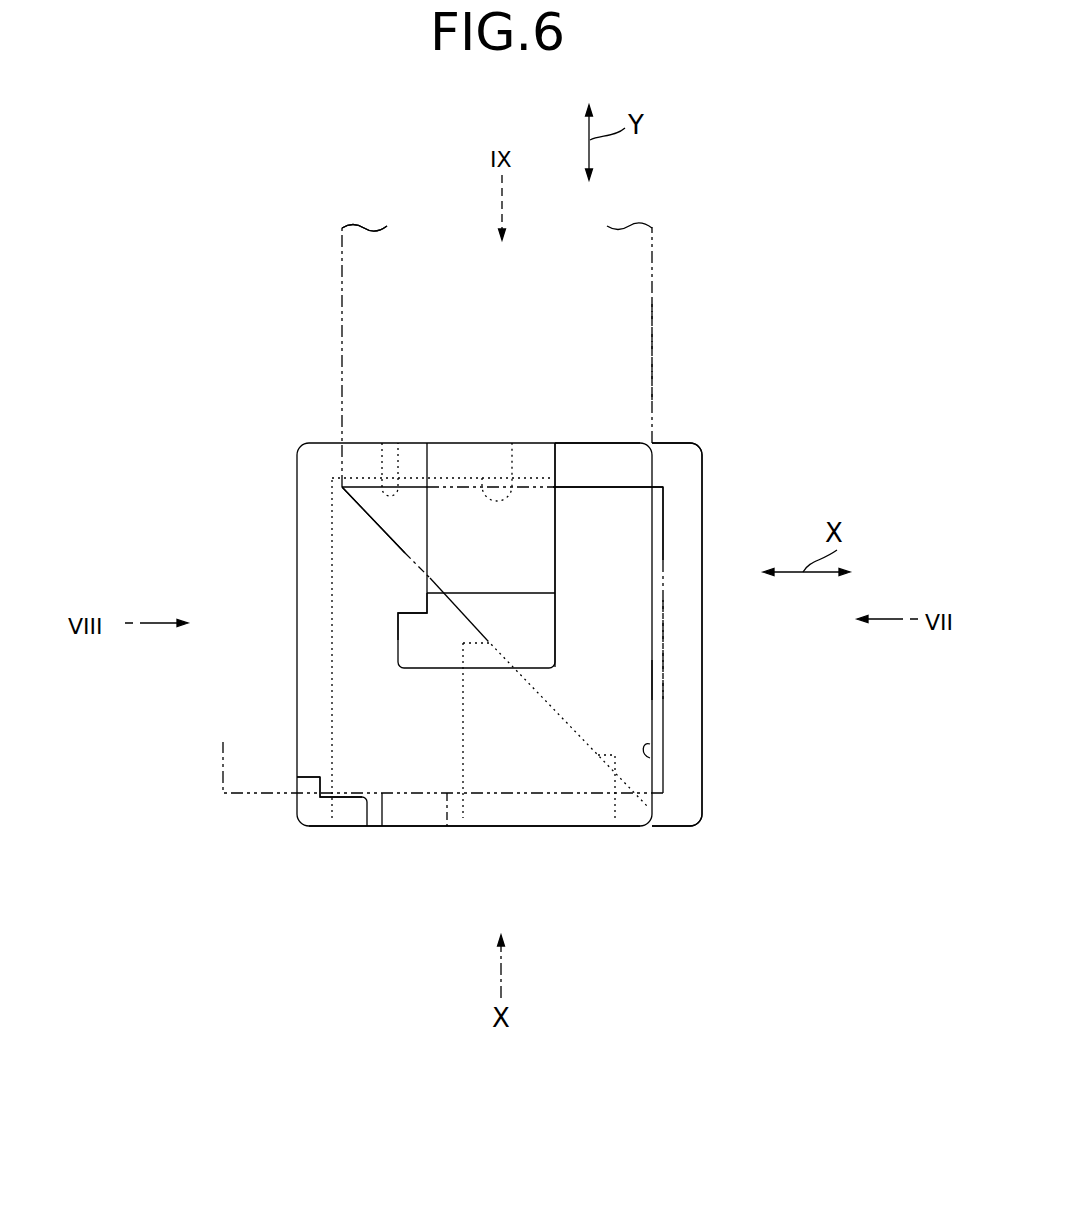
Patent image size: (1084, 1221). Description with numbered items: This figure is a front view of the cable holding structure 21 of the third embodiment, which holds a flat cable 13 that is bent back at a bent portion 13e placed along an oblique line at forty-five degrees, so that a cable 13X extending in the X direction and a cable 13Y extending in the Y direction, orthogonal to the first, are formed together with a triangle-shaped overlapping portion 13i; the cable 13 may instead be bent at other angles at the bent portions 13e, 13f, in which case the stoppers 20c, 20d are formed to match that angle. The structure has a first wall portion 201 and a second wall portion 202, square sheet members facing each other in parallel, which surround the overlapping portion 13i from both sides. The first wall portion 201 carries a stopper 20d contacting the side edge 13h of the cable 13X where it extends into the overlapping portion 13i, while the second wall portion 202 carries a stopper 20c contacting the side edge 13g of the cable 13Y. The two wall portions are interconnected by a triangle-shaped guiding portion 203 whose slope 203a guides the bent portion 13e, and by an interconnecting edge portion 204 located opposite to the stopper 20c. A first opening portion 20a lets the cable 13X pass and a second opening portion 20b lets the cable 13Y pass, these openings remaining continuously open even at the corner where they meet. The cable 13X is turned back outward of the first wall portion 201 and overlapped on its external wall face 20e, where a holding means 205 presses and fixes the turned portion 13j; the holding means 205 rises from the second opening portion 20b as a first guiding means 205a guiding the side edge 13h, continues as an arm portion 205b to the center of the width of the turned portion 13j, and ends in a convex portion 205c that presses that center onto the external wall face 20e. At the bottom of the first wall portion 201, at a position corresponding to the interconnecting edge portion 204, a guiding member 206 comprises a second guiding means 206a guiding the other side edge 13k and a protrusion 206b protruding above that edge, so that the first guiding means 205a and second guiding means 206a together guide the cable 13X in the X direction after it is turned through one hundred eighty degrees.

The cable 13 is at (667, 297).
The cable extending in X direction 13X is at (661, 503).
The cable extending in Y direction 13Y is at (615, 276).
The bent portion 13e is at (372, 518).
The bent portion 13f is at (373, 520).
The side edge 13g is at (652, 355).
The side edge 13h is at (610, 483).
The overlapping portion 13i is at (620, 668).
The turned portion 13j is at (448, 828).
The other side edge 13k is at (382, 820).
The first opening portion 20a is at (653, 682).
The second opening portion 20b is at (583, 440).
The stopper 20c is at (650, 753).
The stopper 20d is at (398, 488).
The external wall face 20e is at (360, 737).
The cable holding structure 21 is at (762, 427).
The first wall portion 201 is at (666, 806).
The second wall portion 202 is at (712, 729).
The guiding portion 203 is at (546, 808).
The slope 203a is at (613, 797).
The interconnecting edge portion 204 is at (315, 697).
The holding means 205 is at (564, 626).
The first guiding means 205a is at (512, 478).
The arm portion 205b is at (557, 553).
The convex portion 205c is at (397, 640).
The guiding member 206 is at (295, 840).
The second guiding means 206a is at (350, 793).
The protrusion 206b is at (293, 782).